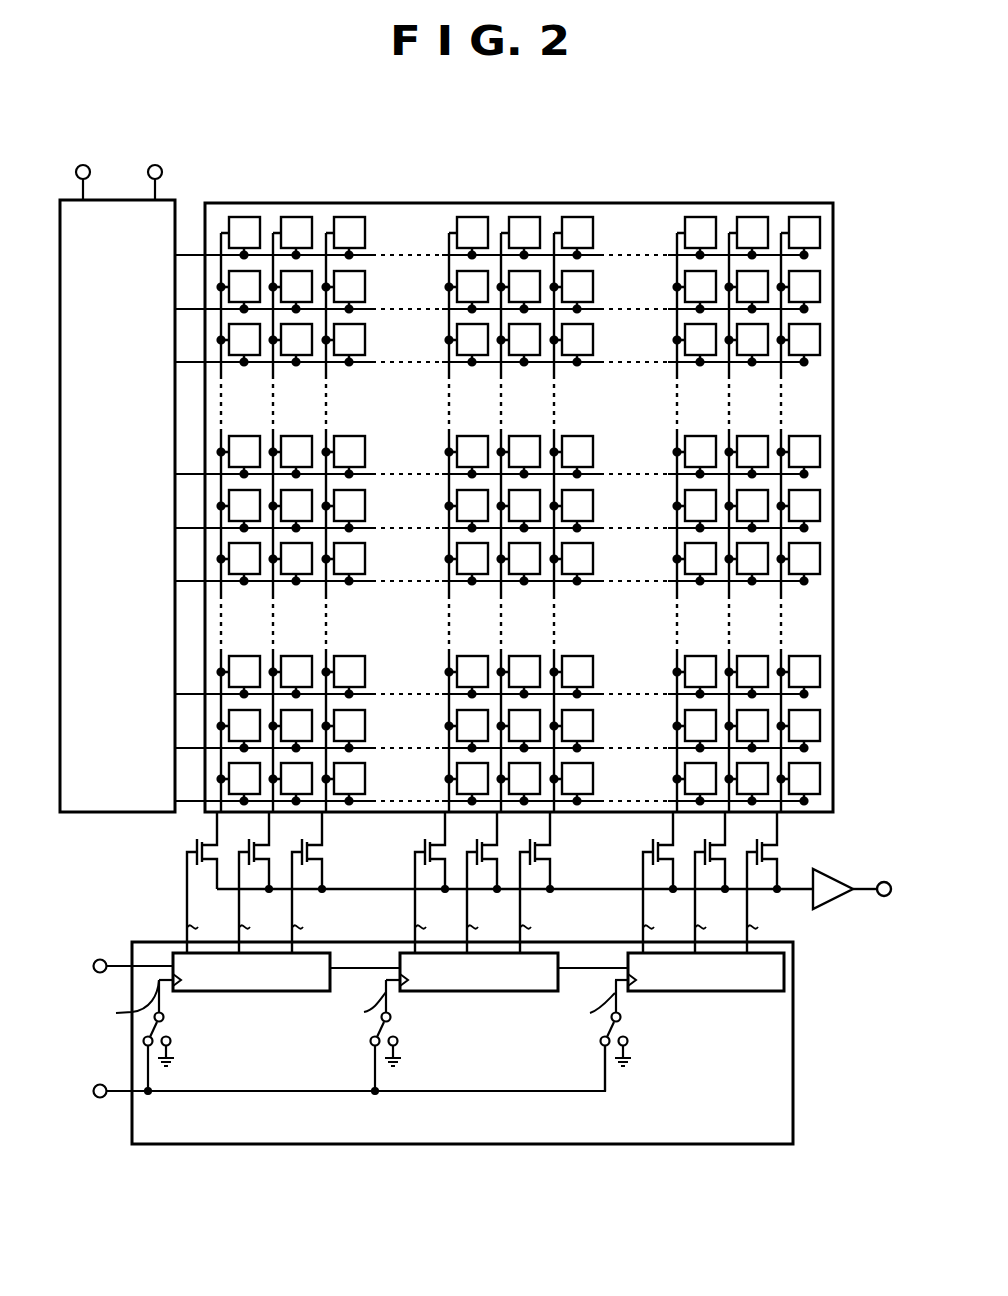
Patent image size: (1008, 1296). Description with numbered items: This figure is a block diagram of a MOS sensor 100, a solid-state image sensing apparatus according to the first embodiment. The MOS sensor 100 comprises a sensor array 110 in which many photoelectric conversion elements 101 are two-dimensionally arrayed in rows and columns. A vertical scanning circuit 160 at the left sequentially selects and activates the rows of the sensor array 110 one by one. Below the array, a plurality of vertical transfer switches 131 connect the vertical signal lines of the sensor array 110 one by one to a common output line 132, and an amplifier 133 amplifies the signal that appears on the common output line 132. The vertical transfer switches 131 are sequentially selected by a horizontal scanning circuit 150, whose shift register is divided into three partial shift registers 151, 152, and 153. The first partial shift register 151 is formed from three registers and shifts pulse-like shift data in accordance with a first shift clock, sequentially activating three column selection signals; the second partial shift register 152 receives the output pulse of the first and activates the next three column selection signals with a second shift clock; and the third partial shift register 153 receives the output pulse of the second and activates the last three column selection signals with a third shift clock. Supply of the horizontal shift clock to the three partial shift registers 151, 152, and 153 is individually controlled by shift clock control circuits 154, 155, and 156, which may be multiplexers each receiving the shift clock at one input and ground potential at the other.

The MOS sensor 100 is at (836, 399).
The photoelectric conversion element 101 is at (247, 224).
The sensor array 110 is at (497, 473).
The vertical transfer switch 131 is at (188, 843).
The common output line 132 is at (792, 894).
The amplifier 133 is at (836, 873).
The horizontal scanning circuit 150 is at (446, 1043).
The first partial shift register 151 is at (251, 992).
The second partial shift register 152 is at (480, 992).
The third partial shift register 153 is at (708, 992).
The shift clock control circuit 154 is at (175, 1048).
The shift clock control circuit 155 is at (402, 1048).
The shift clock control circuit 156 is at (632, 1050).
The vertical scanning circuit 160 is at (168, 199).